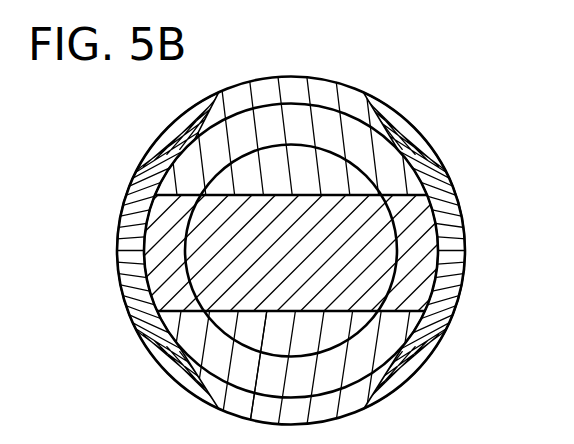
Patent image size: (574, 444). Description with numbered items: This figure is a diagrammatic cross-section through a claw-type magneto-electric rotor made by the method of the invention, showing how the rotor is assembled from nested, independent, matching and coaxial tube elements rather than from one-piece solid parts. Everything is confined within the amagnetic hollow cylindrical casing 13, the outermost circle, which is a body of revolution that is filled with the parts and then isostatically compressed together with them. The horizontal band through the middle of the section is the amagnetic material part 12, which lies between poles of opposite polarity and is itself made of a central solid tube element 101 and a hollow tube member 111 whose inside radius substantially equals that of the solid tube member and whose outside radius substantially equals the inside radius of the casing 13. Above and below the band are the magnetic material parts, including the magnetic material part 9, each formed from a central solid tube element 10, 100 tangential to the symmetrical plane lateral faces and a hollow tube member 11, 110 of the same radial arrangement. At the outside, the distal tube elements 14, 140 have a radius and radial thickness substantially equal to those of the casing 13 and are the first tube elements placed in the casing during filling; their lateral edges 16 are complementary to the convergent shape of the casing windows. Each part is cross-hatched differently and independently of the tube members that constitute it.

The magnetic material part 9 is at (263, 380).
The central solid tube element 10 is at (248, 173).
The hollow tube member 11 is at (363, 148).
The amagnetic material part 12 is at (167, 284).
The hollow cylindrical casing 13 is at (443, 318).
The distal tube element 14 is at (318, 92).
The lateral edges 16 is at (390, 130).
The central solid tube element 100 is at (245, 333).
The central solid tube element 101 is at (215, 230).
The hollow tube member 110 is at (383, 348).
The hollow tube member 111 is at (422, 243).
The distal tube element 140 is at (327, 413).